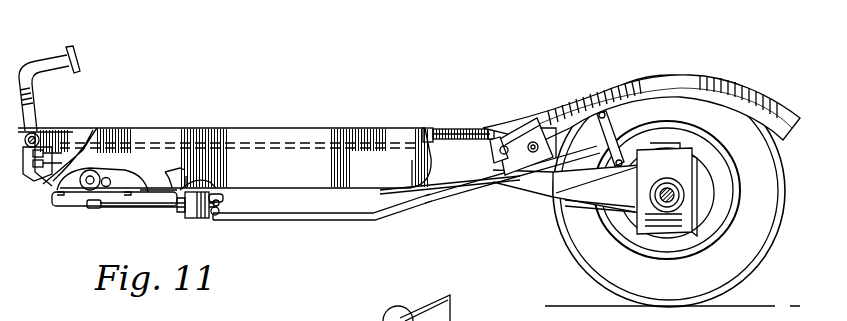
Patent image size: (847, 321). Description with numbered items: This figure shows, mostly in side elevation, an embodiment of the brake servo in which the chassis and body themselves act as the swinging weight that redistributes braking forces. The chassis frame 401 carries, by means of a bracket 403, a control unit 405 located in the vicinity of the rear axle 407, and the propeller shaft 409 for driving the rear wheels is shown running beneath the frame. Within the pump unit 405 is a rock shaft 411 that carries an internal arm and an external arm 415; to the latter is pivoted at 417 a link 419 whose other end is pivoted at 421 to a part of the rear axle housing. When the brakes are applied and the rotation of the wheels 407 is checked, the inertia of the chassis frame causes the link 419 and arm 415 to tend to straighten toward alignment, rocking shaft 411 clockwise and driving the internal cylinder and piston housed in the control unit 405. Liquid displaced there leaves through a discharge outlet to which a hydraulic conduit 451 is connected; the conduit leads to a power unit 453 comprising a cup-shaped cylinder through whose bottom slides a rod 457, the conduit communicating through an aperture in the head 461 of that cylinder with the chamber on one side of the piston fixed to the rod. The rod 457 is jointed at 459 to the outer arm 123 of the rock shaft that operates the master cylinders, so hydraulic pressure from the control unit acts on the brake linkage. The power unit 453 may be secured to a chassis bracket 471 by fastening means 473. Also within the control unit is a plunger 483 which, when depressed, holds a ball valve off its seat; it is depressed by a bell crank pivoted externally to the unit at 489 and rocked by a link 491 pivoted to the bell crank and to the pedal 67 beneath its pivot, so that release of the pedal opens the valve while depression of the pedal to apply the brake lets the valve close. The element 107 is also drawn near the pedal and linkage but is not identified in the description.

The pedal 67 is at (24, 100).
The floor bracket 107 is at (57, 178).
The outer arm 123 is at (90, 197).
The chassis frame 401 is at (324, 139).
The bracket 403 is at (520, 124).
The control unit 405 is at (522, 168).
The rear axle 407 is at (580, 260).
The propeller shaft 409 is at (488, 187).
The rock shaft 411 is at (546, 138).
The external arm 415 is at (580, 123).
The pivot 417 is at (627, 84).
The link 419 is at (636, 120).
The pivot 421 is at (570, 200).
The hydraulic conduit 451 is at (393, 214).
The power unit 453 is at (187, 190).
The rod 457 is at (158, 203).
The joint 459 is at (97, 208).
The head 461 is at (205, 210).
The chassis bracket 471 is at (213, 204).
The fastening means 473 is at (216, 204).
The plunger 483 is at (496, 157).
The pivot 489 is at (483, 128).
The link 491 is at (80, 148).